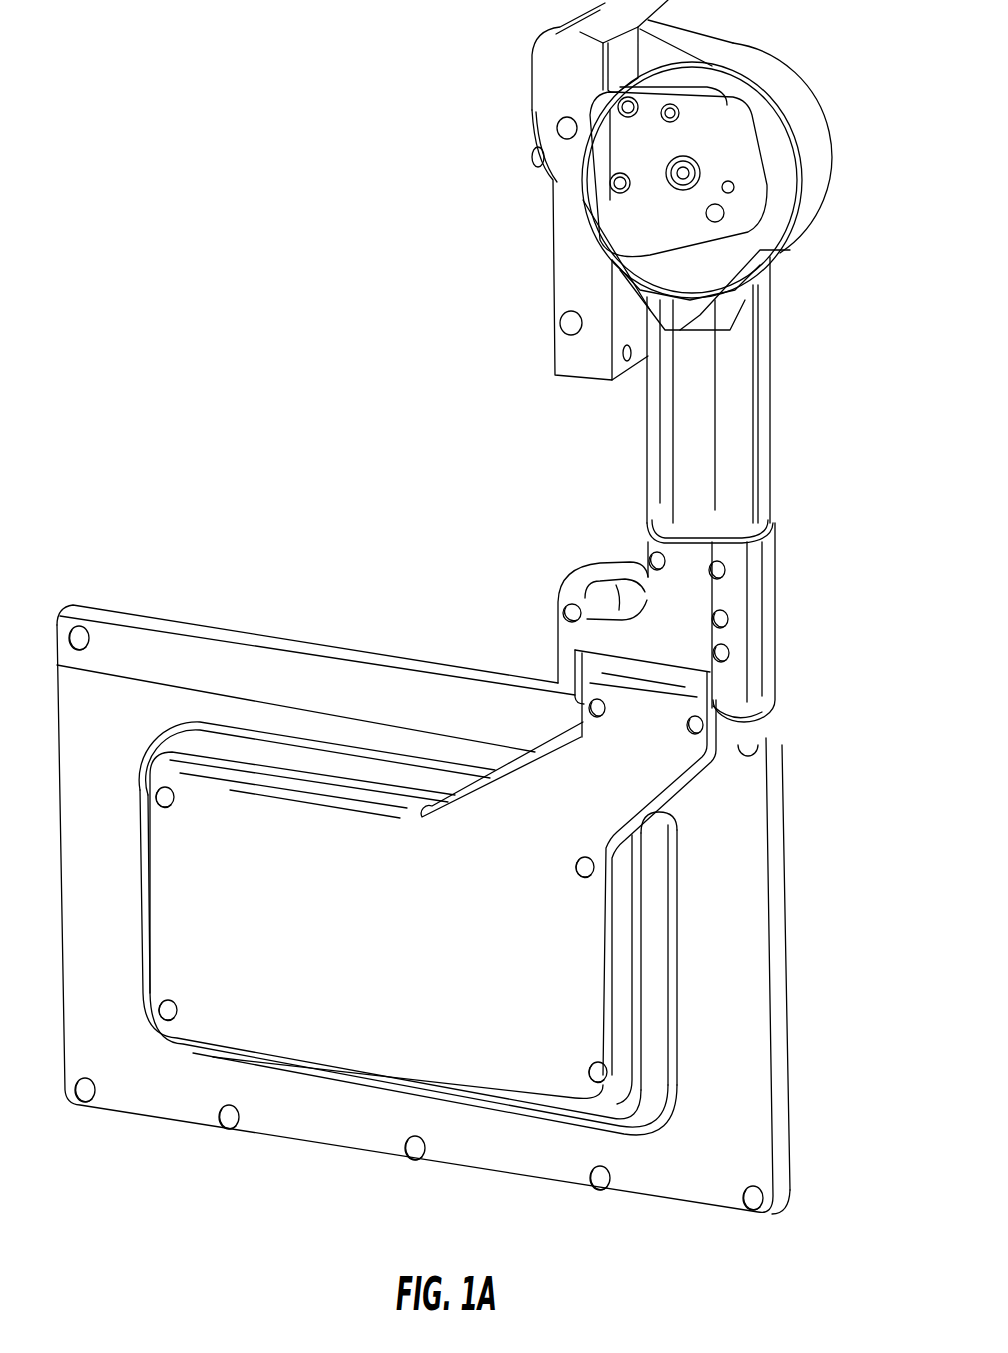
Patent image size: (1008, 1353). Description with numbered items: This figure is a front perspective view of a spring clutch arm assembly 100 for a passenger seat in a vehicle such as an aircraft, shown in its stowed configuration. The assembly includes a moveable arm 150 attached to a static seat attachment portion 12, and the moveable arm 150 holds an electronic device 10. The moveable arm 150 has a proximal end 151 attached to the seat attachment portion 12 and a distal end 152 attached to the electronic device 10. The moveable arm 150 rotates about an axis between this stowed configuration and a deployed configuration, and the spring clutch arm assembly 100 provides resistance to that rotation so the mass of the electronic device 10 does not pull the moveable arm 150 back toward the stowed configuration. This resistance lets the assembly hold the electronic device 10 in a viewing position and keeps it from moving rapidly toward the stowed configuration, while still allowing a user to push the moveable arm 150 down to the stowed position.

The spring clutch arm assembly 100 is at (349, 183).
The electronic device 10 is at (236, 670).
The seat attachment portion 12 is at (552, 65).
The moveable arm 150 is at (684, 457).
The proximal end 151 is at (735, 208).
The distal end 152 is at (690, 637).